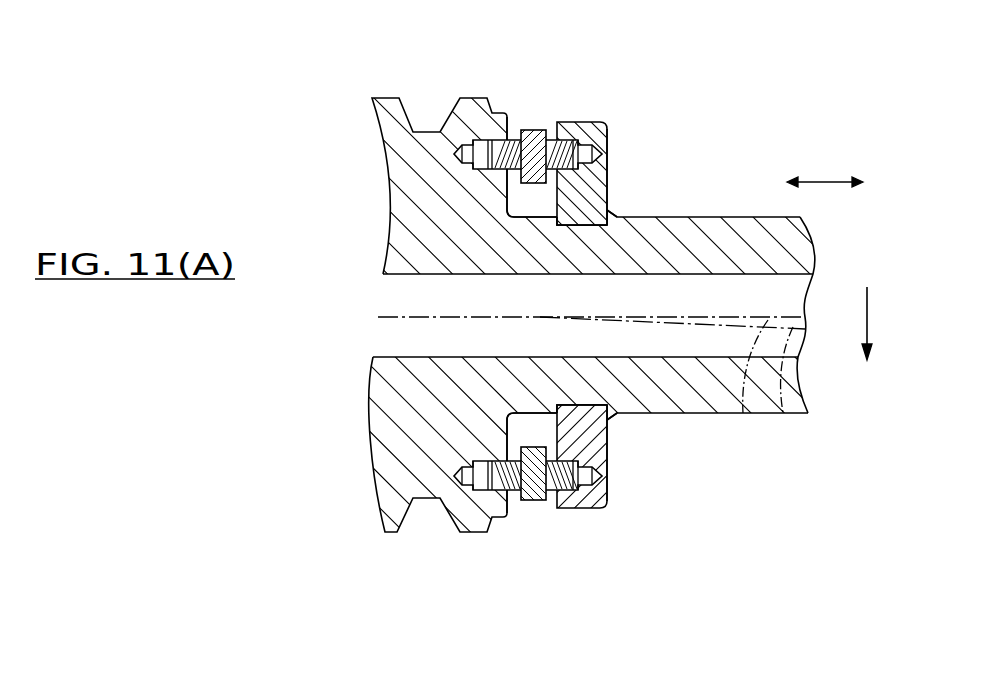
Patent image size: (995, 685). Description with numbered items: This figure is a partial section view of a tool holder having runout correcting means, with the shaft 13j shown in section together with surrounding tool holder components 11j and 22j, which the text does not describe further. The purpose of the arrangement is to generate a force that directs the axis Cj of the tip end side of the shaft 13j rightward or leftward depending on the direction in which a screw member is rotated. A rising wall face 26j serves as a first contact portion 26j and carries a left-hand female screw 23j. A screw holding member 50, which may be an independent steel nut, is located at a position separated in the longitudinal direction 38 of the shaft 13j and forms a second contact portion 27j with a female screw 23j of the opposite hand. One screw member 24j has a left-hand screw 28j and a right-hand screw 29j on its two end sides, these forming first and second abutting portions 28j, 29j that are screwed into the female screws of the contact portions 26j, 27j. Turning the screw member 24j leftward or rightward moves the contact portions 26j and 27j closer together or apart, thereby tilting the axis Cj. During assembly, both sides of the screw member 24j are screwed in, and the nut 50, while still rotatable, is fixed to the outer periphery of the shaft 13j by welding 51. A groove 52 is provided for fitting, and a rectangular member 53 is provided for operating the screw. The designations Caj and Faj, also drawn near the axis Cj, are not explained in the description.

The housing 11j is at (433, 143).
The shaft 13j is at (740, 223).
The bore 22j is at (495, 222).
The female screw 23j is at (517, 210).
The screw member 24j is at (463, 147).
The rising wall face 26j is at (500, 173).
The second contact portion 27j is at (562, 124).
The left-hand screw 28j is at (515, 139).
The right-hand screw 29j is at (548, 130).
The longitudinal direction 38 is at (820, 180).
The screw holding member 50 is at (605, 140).
The welding 51 is at (607, 207).
The groove for fitting 52 is at (580, 224).
The rectangular member 53 is at (523, 503).
The tilted axis circle Caj is at (747, 413).
The axis Cj is at (792, 413).
The force arrow Faj is at (868, 330).